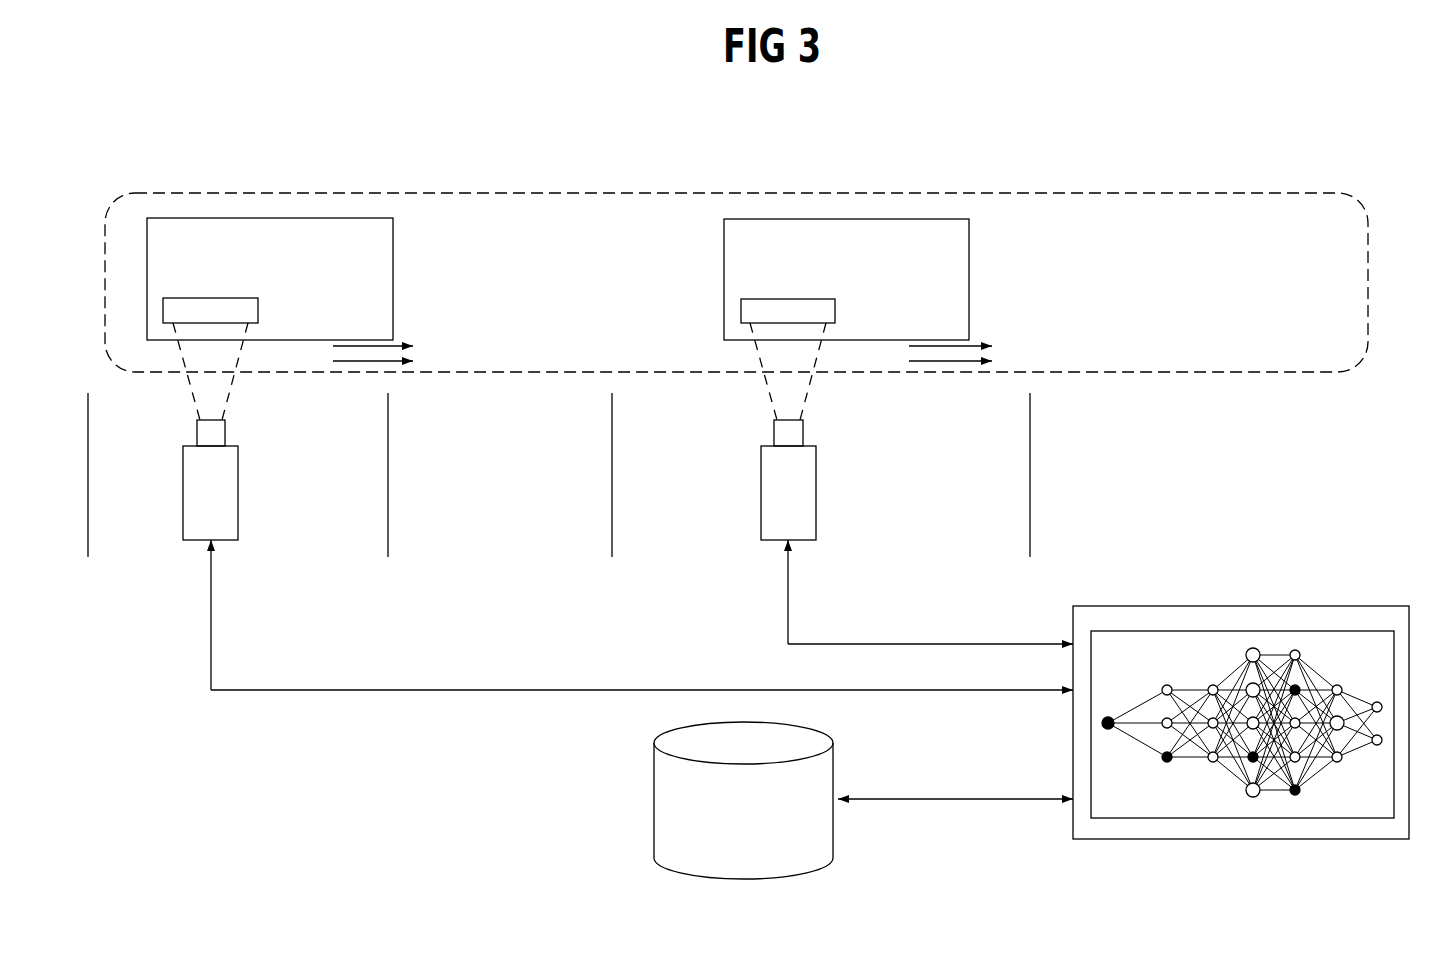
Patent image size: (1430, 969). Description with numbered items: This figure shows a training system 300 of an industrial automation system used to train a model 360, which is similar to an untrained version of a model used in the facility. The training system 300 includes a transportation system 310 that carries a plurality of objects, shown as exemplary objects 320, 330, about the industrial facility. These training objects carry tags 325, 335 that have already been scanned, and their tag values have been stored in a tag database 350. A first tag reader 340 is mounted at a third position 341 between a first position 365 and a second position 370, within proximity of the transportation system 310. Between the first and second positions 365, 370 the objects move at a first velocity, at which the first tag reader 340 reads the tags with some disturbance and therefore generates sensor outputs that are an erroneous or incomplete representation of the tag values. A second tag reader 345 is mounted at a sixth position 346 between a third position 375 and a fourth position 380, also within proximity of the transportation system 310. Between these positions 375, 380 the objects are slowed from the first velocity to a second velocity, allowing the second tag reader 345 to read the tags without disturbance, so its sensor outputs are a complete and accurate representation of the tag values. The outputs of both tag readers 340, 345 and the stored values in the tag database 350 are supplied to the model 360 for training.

The training system 300 is at (1313, 148).
The transportation system 310 is at (1256, 193).
The object 320 is at (393, 247).
The tag 325 is at (258, 309).
The object 330 is at (969, 247).
The tag 335 is at (835, 309).
The first tag reader 340 is at (238, 469).
The third position 341 is at (258, 545).
The second tag reader 345 is at (816, 469).
The sixth position 346 is at (835, 545).
The tag database 350 is at (654, 779).
The model 360 is at (1265, 840).
The first position 365 is at (88, 538).
The second position 370 is at (388, 540).
The third position 375 is at (612, 540).
The fourth position 380 is at (1030, 536).